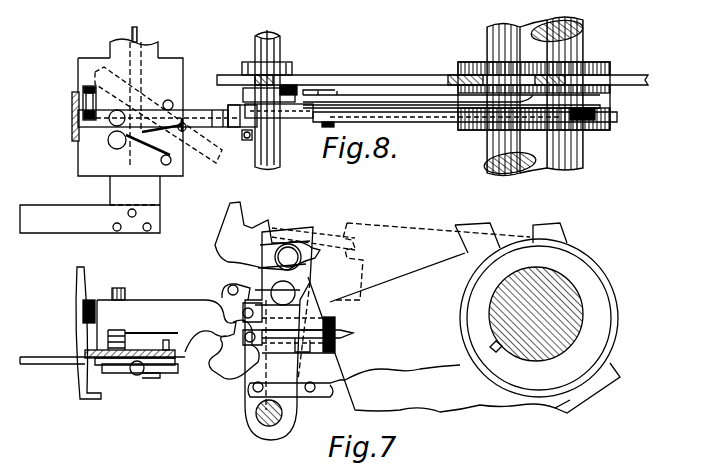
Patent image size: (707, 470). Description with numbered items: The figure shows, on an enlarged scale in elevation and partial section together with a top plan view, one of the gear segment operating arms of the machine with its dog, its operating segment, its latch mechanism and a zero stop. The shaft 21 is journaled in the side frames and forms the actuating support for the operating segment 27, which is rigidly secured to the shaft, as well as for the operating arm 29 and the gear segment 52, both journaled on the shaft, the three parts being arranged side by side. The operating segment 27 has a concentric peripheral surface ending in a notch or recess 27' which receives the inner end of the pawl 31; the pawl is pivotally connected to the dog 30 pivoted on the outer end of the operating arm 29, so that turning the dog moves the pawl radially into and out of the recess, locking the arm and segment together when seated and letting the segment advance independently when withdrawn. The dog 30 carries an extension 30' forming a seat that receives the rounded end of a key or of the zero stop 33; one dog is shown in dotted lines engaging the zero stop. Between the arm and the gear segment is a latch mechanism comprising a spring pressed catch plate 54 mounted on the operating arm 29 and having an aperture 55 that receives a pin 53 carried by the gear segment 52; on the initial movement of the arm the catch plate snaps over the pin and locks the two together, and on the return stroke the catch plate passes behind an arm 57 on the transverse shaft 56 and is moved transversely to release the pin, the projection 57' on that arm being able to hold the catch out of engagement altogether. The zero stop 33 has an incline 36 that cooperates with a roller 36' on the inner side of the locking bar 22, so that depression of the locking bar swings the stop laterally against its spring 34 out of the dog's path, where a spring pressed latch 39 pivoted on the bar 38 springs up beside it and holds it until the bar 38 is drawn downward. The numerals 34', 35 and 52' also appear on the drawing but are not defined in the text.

In FIG. 8, the shaft 21 is at (560, 153).
In FIG. 7, the shaft 21 is at (563, 302).
In FIG. 8, the locking bar 22 is at (73, 105).
In FIG. 7, the locking bar 22 is at (80, 295).
In FIG. 8, the operating segment 27 is at (451, 125).
In FIG. 7, the operating segment 27 is at (430, 266).
In FIG. 7, the notch or recess 27' is at (327, 327).
In FIG. 8, the operating arm 29 is at (392, 112).
In FIG. 7, the operating arm 29 is at (345, 385).
In FIG. 8, the dog 30 is at (232, 140).
In FIG. 7, the dog 30 is at (232, 363).
In FIG. 7, the extension 30' is at (200, 377).
In FIG. 8, the pawl 31 is at (312, 115).
In FIG. 7, the pawl 31 is at (345, 340).
In FIG. 8, the zero stop 33 is at (190, 113).
In FIG. 7, the zero stop 33 is at (150, 305).
In FIG. 8, the spring 34 is at (158, 137).
In FIG. 7, the spring 34' is at (145, 331).
In FIG. 8, the support block 35 is at (170, 103).
In FIG. 8, the incline 36 is at (95, 62).
In FIG. 7, the incline 36 is at (112, 319).
In FIG. 8, the roller 36' is at (68, 71).
In FIG. 7, the roller 36' is at (107, 293).
In FIG. 8, the bar 38 is at (120, 191).
In FIG. 7, the bar 38 is at (43, 368).
In FIG. 8, the spring pressed latch 39 is at (183, 118).
In FIG. 7, the spring pressed latch 39 is at (172, 376).
In FIG. 8, the gear segment 52 is at (432, 68).
In FIG. 7, the gear segment 52 is at (400, 236).
In FIG. 7, the lug 52' is at (586, 398).
In FIG. 8, the pin 53 is at (282, 88).
In FIG. 7, the pin 53 is at (293, 254).
In FIG. 8, the spring pressed catch plate 54 is at (273, 102).
In FIG. 7, the spring pressed catch plate 54 is at (286, 324).
In FIG. 7, the aperture 55 is at (283, 293).
In FIG. 8, the transverse shaft 56 is at (277, 130).
In FIG. 7, the transverse shaft 56 is at (282, 415).
In FIG. 8, the arm 57 is at (288, 69).
In FIG. 7, the arm 57 is at (273, 343).
In FIG. 8, the projection 57' is at (232, 107).
In FIG. 7, the projection 57' is at (220, 295).